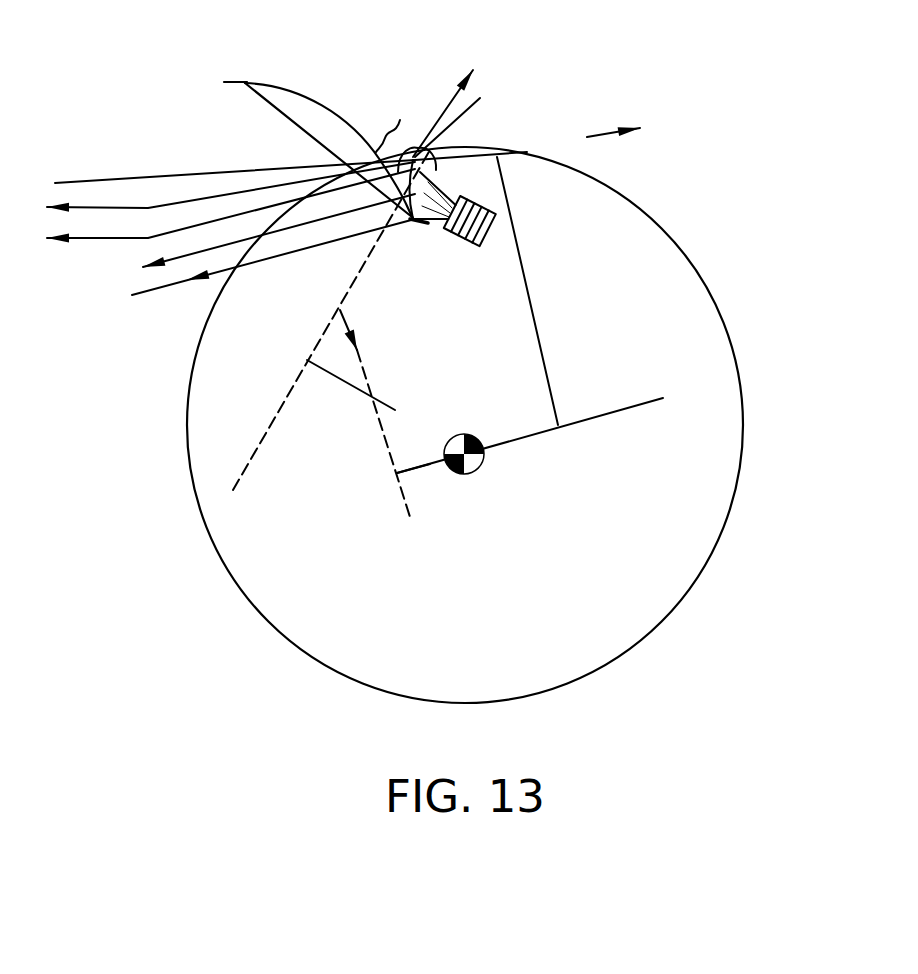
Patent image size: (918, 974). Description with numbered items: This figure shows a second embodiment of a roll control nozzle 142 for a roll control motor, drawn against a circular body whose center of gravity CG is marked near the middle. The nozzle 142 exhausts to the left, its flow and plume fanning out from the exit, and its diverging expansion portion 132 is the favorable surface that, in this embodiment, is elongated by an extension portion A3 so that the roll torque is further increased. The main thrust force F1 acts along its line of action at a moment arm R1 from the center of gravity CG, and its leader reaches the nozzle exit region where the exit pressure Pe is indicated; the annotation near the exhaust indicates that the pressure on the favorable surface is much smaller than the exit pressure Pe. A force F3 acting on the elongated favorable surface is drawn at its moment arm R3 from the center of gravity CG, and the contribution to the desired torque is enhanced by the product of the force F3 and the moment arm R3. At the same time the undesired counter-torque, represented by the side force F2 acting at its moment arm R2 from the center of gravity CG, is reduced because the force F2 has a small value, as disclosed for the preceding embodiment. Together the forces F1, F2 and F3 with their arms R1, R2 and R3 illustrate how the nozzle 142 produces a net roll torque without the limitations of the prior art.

The diverging expansion portion 132 is at (440, 187).
The roll control nozzle 142 is at (480, 227).
The center of gravity CG is at (530, 479).
The force F3 is at (461, 89).
The extension portion A3 is at (476, 117).
The exit pressure Pe is at (335, 191).
The thrust force F1'' F1 is at (582, 144).
The side force F2'' F2 is at (343, 305).
The moment arm R1 is at (527, 291).
The moment arm R2'' R2 is at (436, 493).
The moment arm R3 is at (380, 396).